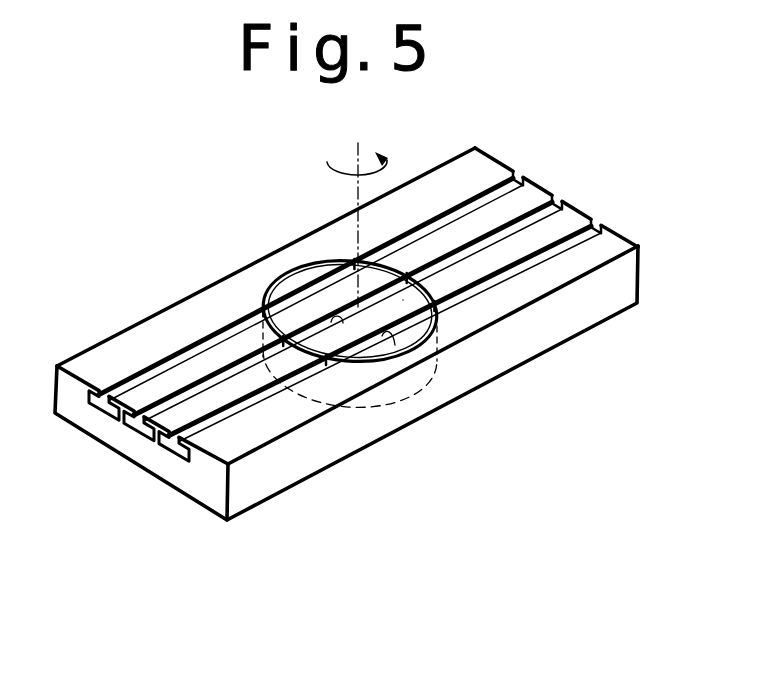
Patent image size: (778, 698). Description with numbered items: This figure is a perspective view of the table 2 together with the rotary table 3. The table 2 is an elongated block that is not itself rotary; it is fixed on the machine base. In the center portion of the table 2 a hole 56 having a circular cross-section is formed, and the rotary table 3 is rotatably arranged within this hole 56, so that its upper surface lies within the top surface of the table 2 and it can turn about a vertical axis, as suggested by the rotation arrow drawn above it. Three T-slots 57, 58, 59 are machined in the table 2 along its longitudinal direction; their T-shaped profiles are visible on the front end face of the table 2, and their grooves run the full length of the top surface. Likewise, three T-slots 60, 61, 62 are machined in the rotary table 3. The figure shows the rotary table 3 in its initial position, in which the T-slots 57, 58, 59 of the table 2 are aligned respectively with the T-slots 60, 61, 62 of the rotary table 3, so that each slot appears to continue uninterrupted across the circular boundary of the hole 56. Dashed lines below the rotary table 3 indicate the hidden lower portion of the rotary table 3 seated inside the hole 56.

The table 2 is at (437, 180).
The rotary table 3 is at (417, 283).
The hole 56 is at (403, 300).
The T-slot 57 is at (102, 413).
The T-slot 58 is at (137, 437).
The T-slot 59 is at (173, 460).
The T-slot 60 is at (266, 320).
The T-slot 61 is at (343, 323).
The T-slot 62 is at (395, 345).